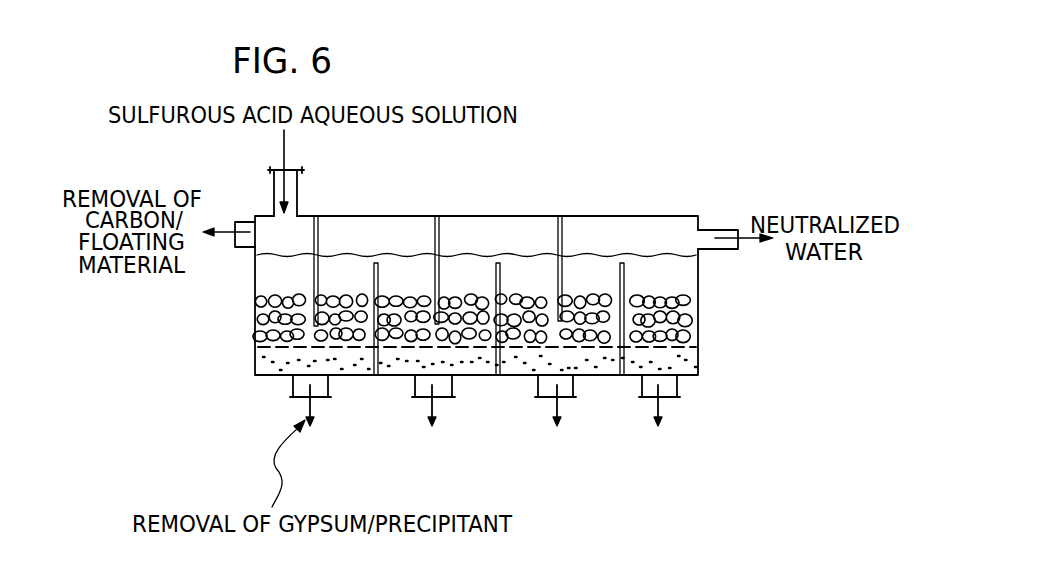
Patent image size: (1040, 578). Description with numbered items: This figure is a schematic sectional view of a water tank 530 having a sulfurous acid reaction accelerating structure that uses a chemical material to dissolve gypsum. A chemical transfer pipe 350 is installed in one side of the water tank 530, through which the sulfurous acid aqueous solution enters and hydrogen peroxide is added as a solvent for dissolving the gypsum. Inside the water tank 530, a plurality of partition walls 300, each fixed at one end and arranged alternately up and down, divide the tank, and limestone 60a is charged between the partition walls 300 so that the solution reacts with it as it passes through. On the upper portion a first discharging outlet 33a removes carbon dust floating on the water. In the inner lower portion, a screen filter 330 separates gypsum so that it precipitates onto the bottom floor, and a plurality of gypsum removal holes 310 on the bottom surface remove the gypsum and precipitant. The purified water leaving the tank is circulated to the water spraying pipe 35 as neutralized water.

The water tank 530 is at (677, 215).
The chemical transfer pipe 350 is at (274, 187).
The water spraying pipe 35 is at (720, 229).
The first discharging outlet 33a is at (250, 247).
The partition walls 300 is at (380, 277).
The limestone 60a is at (480, 335).
The screen filter 330 is at (283, 347).
The gypsum removal holes 310 is at (329, 389).